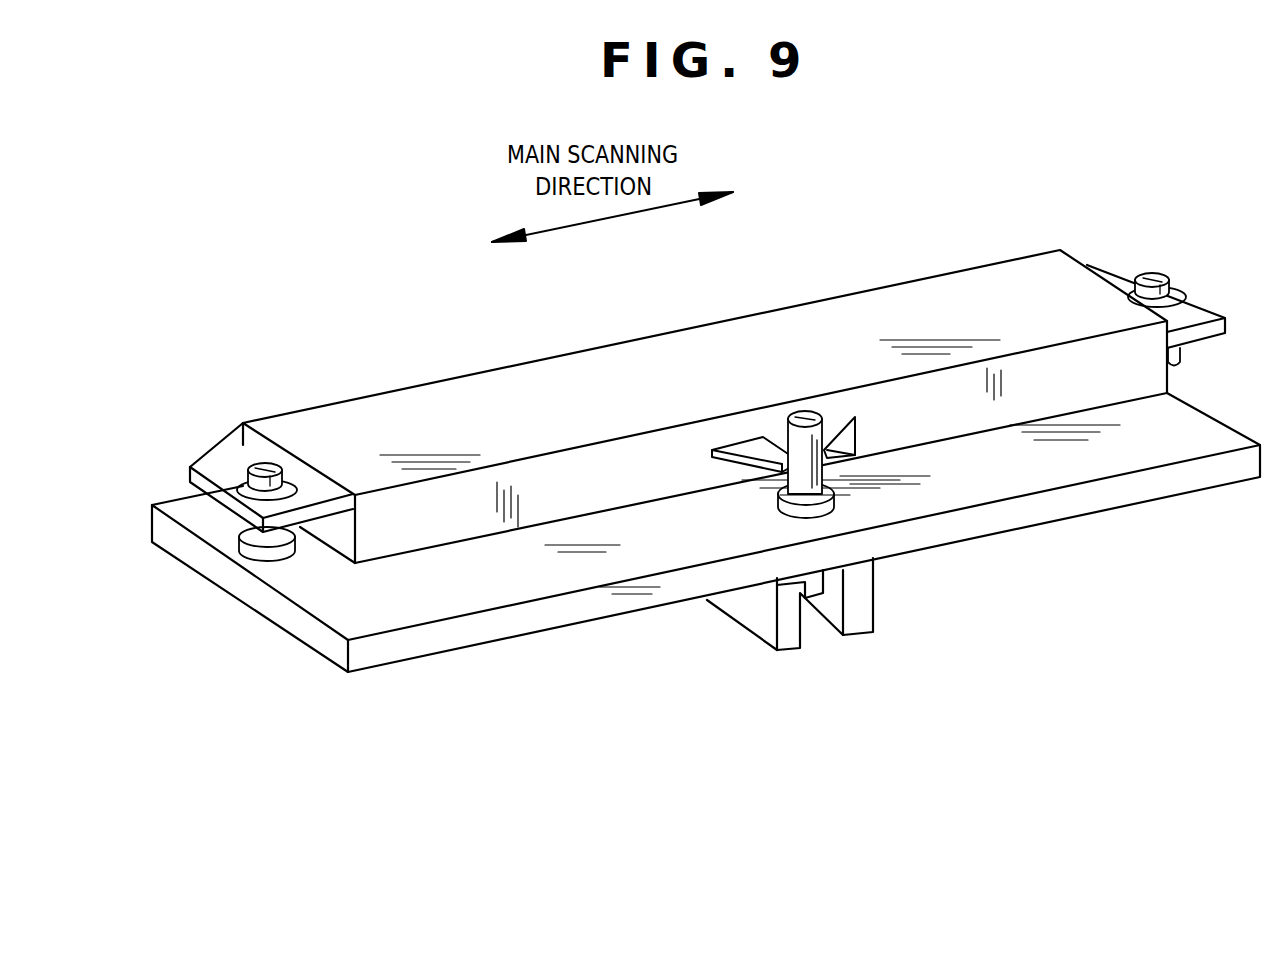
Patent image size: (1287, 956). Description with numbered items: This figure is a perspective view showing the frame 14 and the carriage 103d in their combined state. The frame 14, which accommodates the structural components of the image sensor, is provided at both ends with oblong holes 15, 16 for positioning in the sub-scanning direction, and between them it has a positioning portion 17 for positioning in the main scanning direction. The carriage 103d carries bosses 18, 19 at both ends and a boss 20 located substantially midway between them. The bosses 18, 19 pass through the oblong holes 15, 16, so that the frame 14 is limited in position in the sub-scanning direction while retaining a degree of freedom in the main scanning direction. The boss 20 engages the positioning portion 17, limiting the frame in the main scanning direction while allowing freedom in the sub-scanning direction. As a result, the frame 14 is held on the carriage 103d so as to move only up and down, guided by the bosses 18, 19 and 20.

The frame 14 is at (396, 412).
The oblong hole 15 is at (240, 495).
The oblong hole 16 is at (1190, 297).
The positioning portion 17 is at (757, 447).
The boss 18 is at (243, 462).
The boss 19 is at (1157, 273).
The boss 20 is at (787, 507).
The carriage 103d is at (1020, 512).